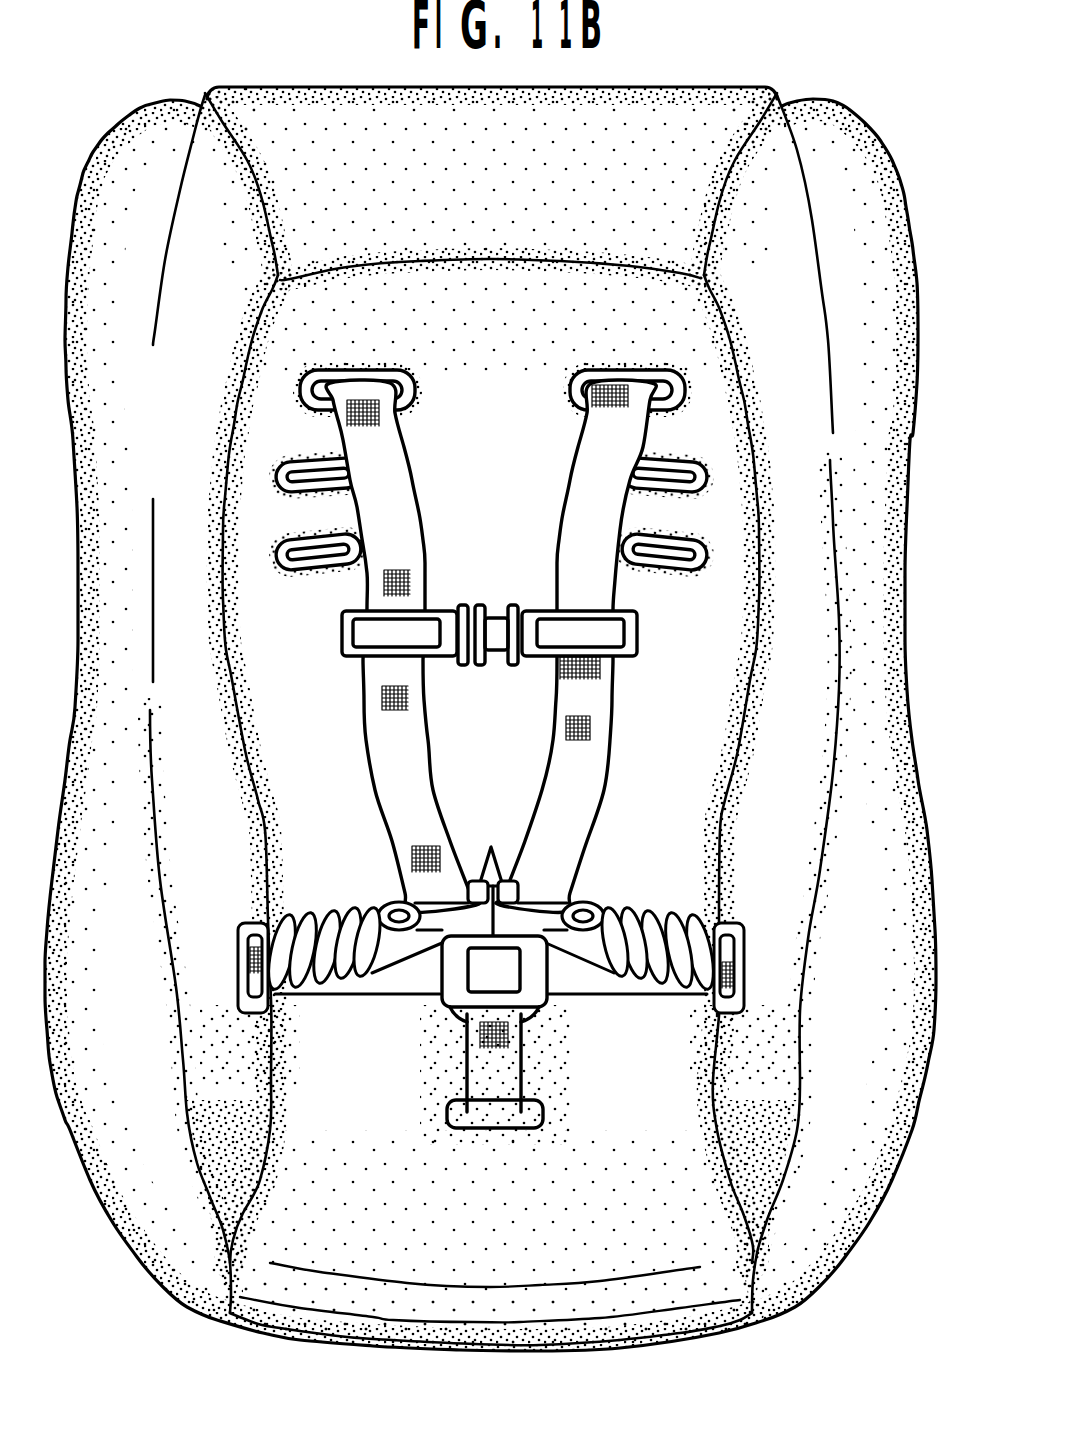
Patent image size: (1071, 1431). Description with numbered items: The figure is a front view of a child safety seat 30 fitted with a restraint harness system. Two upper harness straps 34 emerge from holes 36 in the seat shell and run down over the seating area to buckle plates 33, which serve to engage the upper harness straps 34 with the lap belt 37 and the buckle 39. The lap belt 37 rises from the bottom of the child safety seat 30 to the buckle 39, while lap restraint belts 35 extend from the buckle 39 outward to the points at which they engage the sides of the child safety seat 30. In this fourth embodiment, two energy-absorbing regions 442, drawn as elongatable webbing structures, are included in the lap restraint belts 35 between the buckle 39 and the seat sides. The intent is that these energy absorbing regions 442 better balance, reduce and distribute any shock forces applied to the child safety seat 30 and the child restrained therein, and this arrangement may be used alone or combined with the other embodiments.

The child safety seat 30 is at (820, 75).
The buckle plates 33 is at (491, 848).
The upper harness straps 34 is at (588, 414).
The lap restraint belts 35 is at (729, 945).
The holes 36 is at (578, 375).
The lap belt 37 is at (500, 1067).
The buckle 39 is at (532, 992).
The energy-absorbing region 442 is at (659, 913).